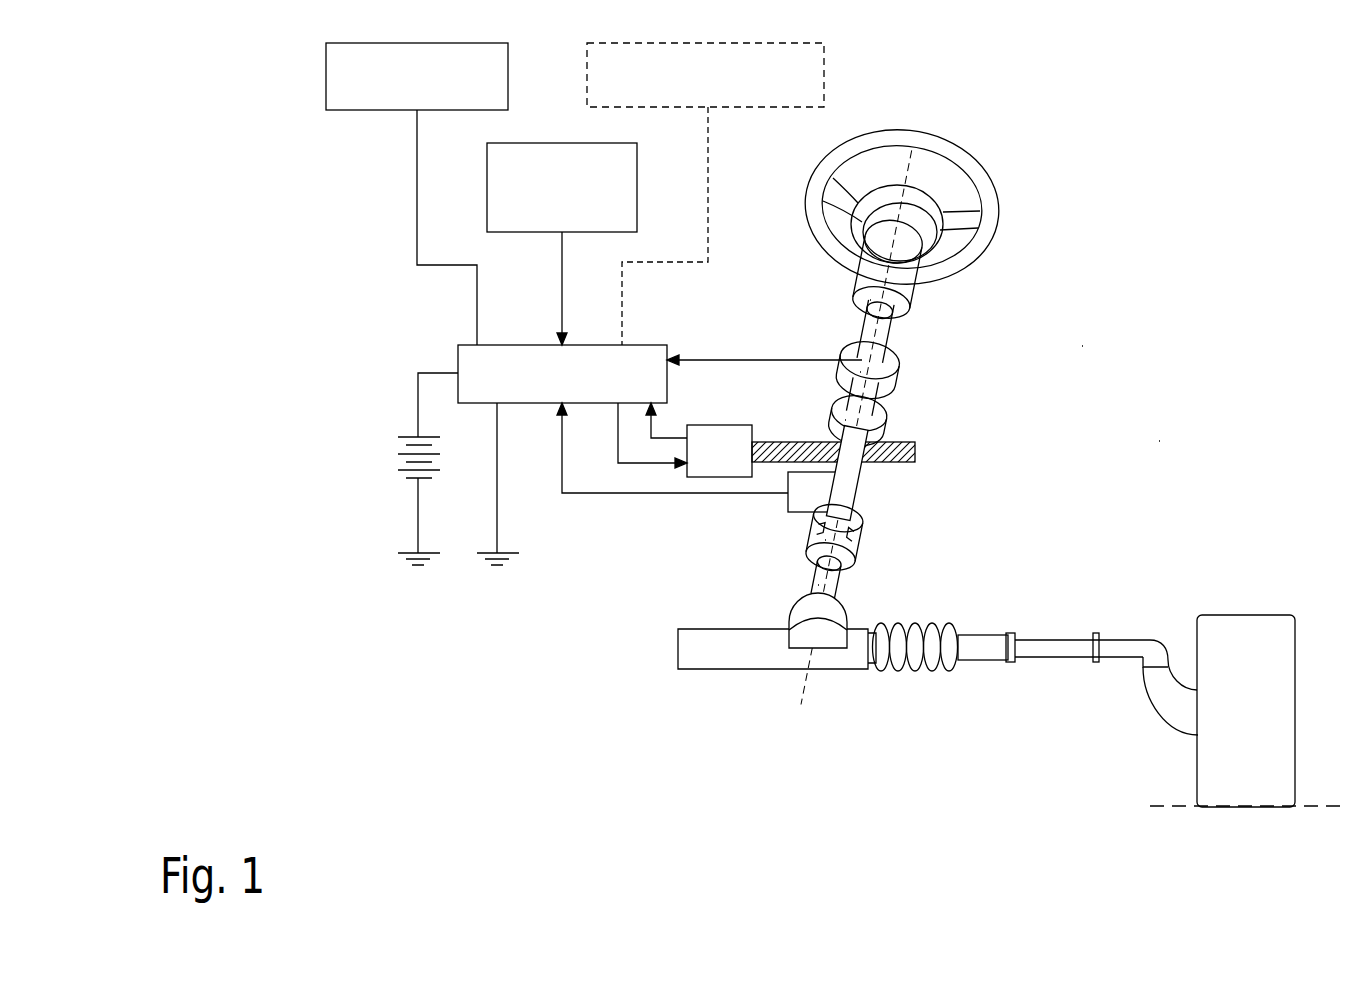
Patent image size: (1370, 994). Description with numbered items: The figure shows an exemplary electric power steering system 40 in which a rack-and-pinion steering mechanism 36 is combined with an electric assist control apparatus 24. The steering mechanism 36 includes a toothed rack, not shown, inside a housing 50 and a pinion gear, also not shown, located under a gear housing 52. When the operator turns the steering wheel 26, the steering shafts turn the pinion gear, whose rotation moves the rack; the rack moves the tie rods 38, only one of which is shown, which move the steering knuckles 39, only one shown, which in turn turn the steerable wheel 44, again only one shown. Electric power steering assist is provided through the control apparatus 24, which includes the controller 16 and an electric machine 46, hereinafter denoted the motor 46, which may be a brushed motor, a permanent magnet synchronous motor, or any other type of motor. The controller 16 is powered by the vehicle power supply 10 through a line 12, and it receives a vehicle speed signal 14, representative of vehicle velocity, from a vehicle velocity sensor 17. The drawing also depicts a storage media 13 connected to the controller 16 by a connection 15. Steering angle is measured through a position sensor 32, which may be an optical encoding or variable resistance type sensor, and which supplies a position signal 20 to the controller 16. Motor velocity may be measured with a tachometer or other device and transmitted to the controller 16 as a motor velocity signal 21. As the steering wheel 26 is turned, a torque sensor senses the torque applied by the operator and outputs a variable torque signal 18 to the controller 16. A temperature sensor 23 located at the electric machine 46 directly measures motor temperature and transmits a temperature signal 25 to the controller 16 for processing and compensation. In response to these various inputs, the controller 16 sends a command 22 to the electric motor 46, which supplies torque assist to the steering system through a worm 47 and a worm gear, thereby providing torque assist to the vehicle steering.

The vehicle power supply 10 is at (403, 457).
The line 12 is at (432, 372).
The storage media 13 is at (355, 112).
The vehicle speed signal 14 is at (560, 247).
The storage media connection line 15 is at (413, 173).
The controller 16 is at (532, 344).
The vehicle velocity sensor 17 is at (562, 141).
The torque signal 18 is at (759, 357).
The position signal 20 is at (676, 494).
The motor velocity signal 21 is at (676, 436).
The command 22 is at (635, 466).
The temperature sensor 23 is at (829, 89).
The control apparatus 24 is at (1091, 341).
The temperature signal 25 is at (715, 170).
The steering wheel 26 is at (955, 157).
The position sensor 32 is at (785, 503).
The steering mechanism 36 is at (946, 616).
The tie rods 38 is at (1050, 648).
The steering knuckles 39 is at (1168, 696).
The electric power steering system 40 is at (1168, 436).
The steerable wheel 44 is at (1235, 627).
The electric machine 46 is at (732, 425).
The worm 47 is at (917, 449).
The housing 50 is at (717, 659).
The gear housing 52 is at (791, 611).